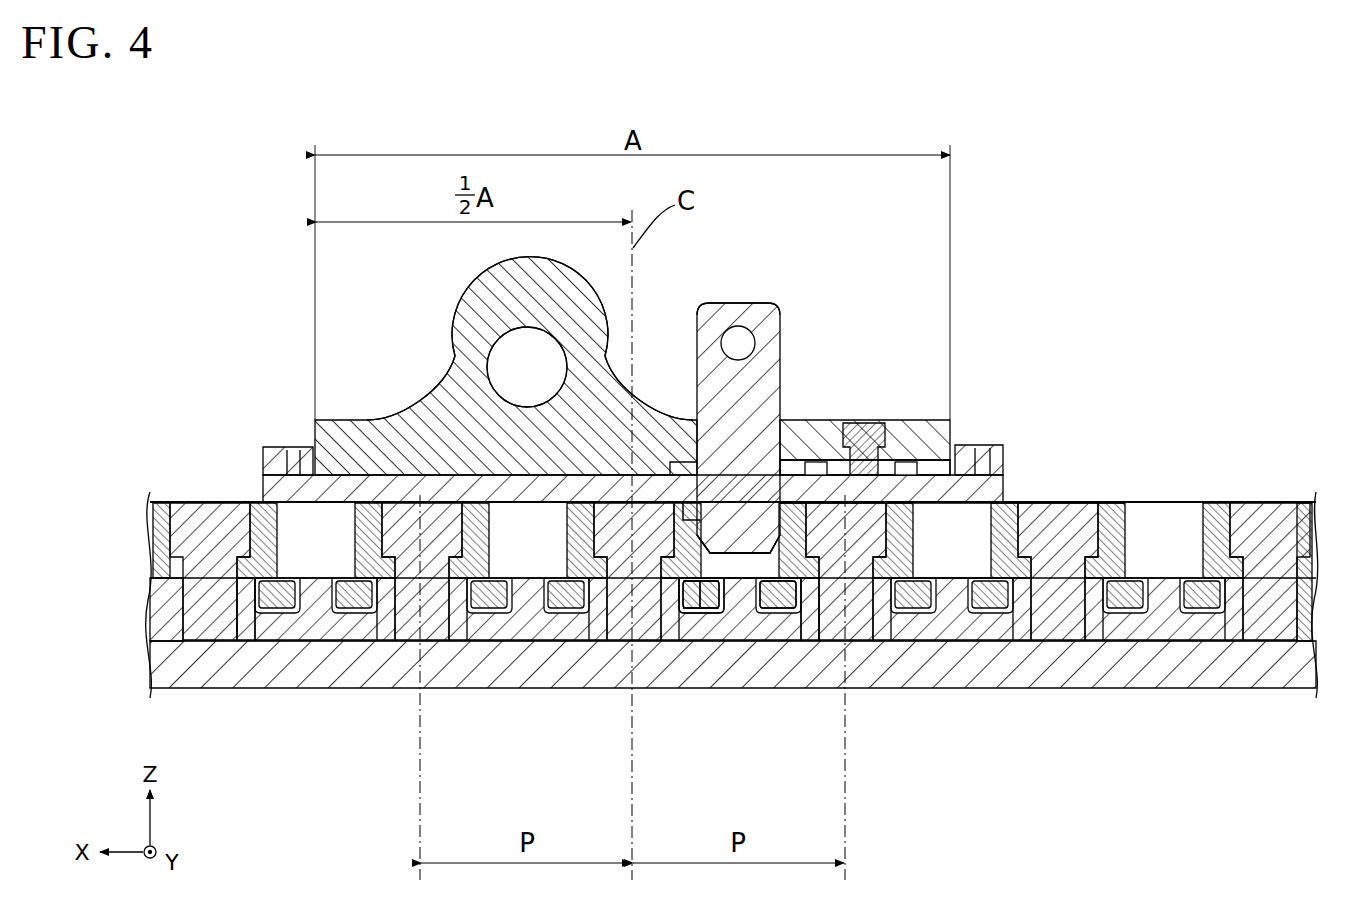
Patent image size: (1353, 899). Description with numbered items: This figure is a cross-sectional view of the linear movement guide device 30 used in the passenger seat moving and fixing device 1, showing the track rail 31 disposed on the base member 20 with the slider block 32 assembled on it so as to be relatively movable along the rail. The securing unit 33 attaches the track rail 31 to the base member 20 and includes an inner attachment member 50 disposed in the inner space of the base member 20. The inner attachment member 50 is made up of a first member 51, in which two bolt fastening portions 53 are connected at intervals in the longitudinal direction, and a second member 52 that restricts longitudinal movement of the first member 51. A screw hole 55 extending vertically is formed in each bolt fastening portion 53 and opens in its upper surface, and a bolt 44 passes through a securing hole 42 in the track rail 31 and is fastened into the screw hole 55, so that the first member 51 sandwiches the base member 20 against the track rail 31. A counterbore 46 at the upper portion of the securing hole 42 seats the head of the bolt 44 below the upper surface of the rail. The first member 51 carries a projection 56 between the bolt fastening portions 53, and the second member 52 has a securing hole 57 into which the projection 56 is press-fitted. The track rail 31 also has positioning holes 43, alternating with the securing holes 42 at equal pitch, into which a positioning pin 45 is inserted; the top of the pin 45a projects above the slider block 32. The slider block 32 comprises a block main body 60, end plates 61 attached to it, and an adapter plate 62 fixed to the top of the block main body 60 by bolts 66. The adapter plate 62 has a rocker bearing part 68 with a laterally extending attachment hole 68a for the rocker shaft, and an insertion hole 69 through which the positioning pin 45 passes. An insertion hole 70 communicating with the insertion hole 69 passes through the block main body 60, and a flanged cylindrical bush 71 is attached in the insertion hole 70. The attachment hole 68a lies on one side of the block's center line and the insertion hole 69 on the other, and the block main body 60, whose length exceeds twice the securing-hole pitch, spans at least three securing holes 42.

The passenger seat moving and fixing device 1 is at (1256, 200).
The base member 20 is at (952, 566).
The linear movement guide device 30 is at (1135, 280).
The track rail 31 is at (683, 462).
The slider block 32 is at (408, 414).
The securing unit 33 is at (322, 652).
The securing hole 42 is at (640, 540).
The positioning hole 43 is at (698, 512).
The bolt 44 is at (605, 520).
The positioning pin 45 is at (756, 305).
The fin top end 45a is at (703, 450).
The counterbore 46 is at (578, 600).
The inner attachment member 50 is at (730, 743).
The first member 51 is at (708, 610).
The second member 52 is at (682, 610).
The bolt fastening portion 53 is at (600, 612).
The screw hole 55 is at (640, 620).
The projection 56 is at (745, 595).
The securing hole 57 is at (782, 612).
The block main body 60 is at (485, 485).
The end plate 61 is at (272, 462).
The adapter plate 62 is at (905, 425).
The bolt 66 is at (864, 425).
The rocker bearing part 68 is at (522, 300).
The attachment hole 68a is at (510, 340).
The insertion hole 69 is at (768, 500).
The insertion hole 70 is at (760, 570).
The bush 71 is at (800, 475).